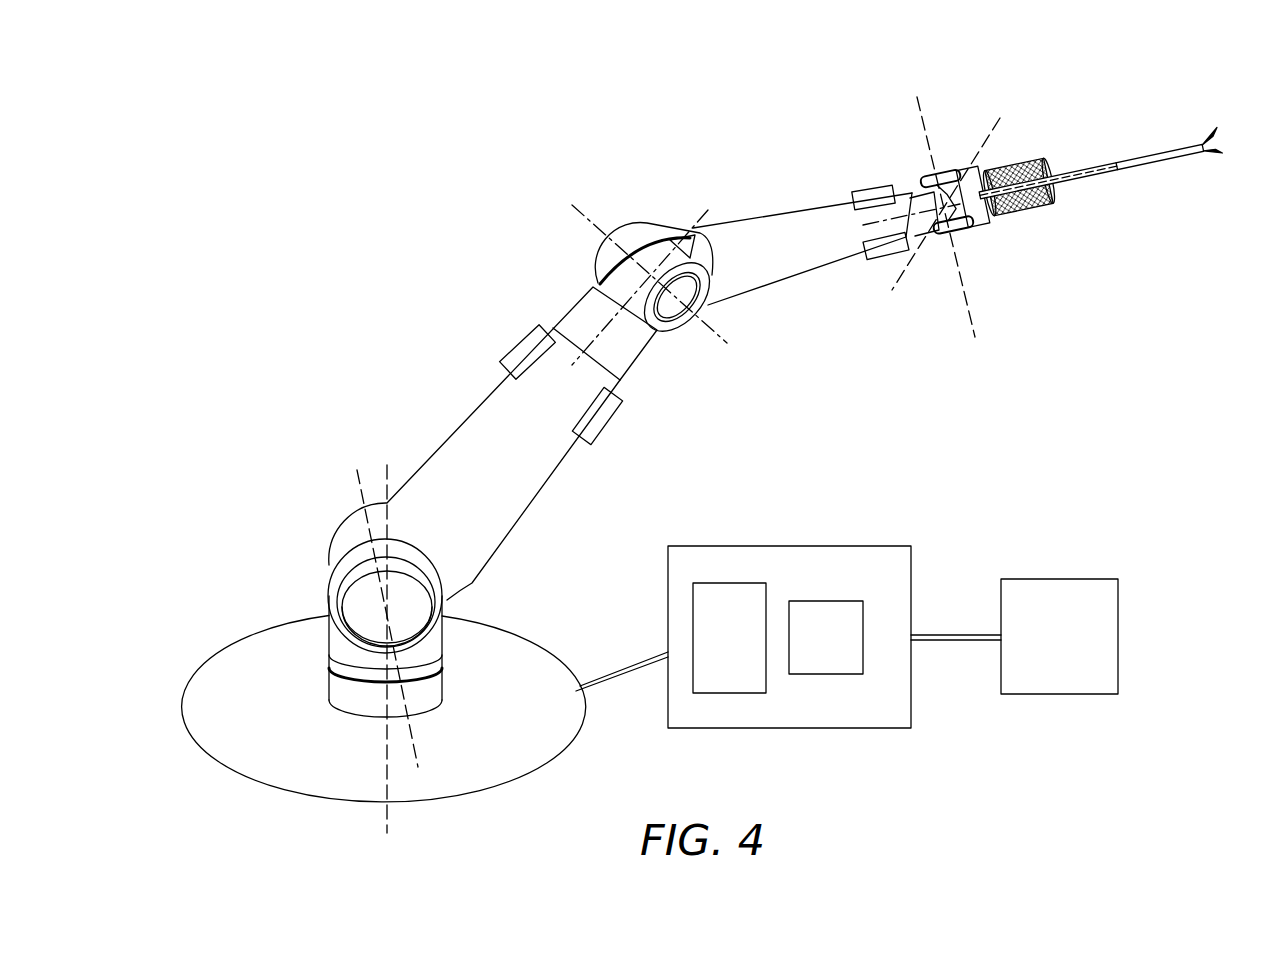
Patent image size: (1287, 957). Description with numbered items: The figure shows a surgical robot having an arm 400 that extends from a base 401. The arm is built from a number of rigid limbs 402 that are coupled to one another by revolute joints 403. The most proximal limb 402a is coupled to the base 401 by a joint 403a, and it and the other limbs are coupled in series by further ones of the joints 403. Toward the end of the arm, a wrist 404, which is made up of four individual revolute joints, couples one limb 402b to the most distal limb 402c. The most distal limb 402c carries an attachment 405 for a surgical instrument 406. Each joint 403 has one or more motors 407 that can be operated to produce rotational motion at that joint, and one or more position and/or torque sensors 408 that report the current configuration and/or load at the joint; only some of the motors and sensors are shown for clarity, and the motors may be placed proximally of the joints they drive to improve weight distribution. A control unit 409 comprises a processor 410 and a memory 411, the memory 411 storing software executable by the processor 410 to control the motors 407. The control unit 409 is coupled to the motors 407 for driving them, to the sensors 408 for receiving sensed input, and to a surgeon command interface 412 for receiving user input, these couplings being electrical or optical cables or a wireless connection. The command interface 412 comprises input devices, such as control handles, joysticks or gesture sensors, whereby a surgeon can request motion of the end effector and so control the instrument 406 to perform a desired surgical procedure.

The arm 400 is at (514, 262).
The base 401 is at (557, 664).
The rigid limbs 402 is at (470, 416).
The most proximal limb 402a is at (333, 667).
The limb 402b is at (812, 218).
The most distal limb 402c is at (1002, 232).
The revolute joints 403 is at (640, 224).
The joint 403a is at (446, 667).
The wrist 404 is at (966, 122).
The attachment 405 is at (1050, 203).
The surgical instrument 406 is at (1110, 162).
The motors 407 is at (516, 352).
The position and/or torque sensors 408 is at (598, 430).
The control unit 409 is at (789, 606).
The processor 410 is at (751, 652).
The memory 411 is at (848, 652).
The surgeon command interface 412 is at (1081, 652).